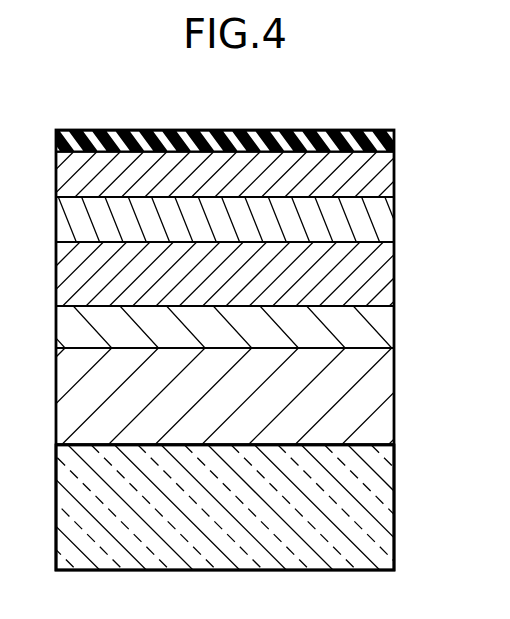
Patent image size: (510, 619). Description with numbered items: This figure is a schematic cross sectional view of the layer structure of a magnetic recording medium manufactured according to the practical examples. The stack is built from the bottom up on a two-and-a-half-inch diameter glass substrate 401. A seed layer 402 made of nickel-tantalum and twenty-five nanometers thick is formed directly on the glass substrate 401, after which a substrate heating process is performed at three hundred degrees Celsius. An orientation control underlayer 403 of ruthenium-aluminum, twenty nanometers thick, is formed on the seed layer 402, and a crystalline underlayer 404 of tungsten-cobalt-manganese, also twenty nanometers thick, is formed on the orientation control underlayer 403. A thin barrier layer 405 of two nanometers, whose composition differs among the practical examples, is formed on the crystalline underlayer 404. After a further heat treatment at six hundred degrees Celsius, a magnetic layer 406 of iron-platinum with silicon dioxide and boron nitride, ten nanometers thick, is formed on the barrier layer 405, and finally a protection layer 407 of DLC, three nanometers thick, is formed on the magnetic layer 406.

The glass substrate 401 is at (382, 507).
The seed layer 402 is at (382, 395).
The orientation control underlayer 403 is at (382, 327).
The crystalline underlayer 404 is at (382, 274).
The barrier layer 405 is at (382, 218).
The magnetic layer 406 is at (382, 177).
The protection layer 407 is at (382, 144).